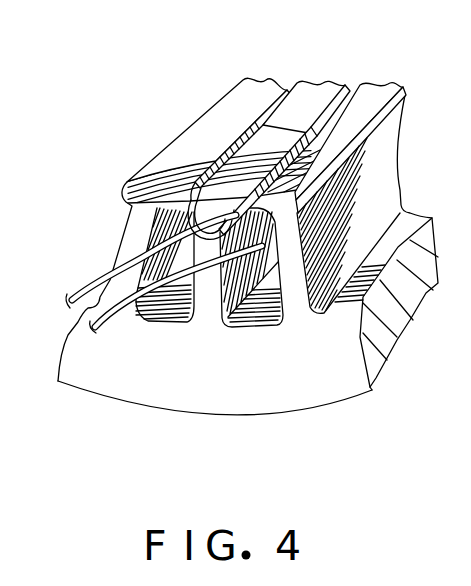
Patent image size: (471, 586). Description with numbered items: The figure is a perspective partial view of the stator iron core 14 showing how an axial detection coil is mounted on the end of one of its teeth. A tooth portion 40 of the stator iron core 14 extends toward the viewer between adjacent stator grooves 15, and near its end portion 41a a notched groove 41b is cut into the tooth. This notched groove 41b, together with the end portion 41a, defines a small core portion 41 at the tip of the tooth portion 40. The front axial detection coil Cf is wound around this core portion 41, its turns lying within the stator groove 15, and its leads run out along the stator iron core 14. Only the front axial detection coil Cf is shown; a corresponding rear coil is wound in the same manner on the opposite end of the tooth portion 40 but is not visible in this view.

The stator iron core 14 is at (299, 410).
The stator groove 15 is at (193, 238).
The tooth portion 40 is at (210, 287).
The core portion 41 is at (247, 157).
The end portion 41a is at (217, 207).
The notched groove 41b is at (302, 117).
The front axial detection coil Cf is at (153, 210).